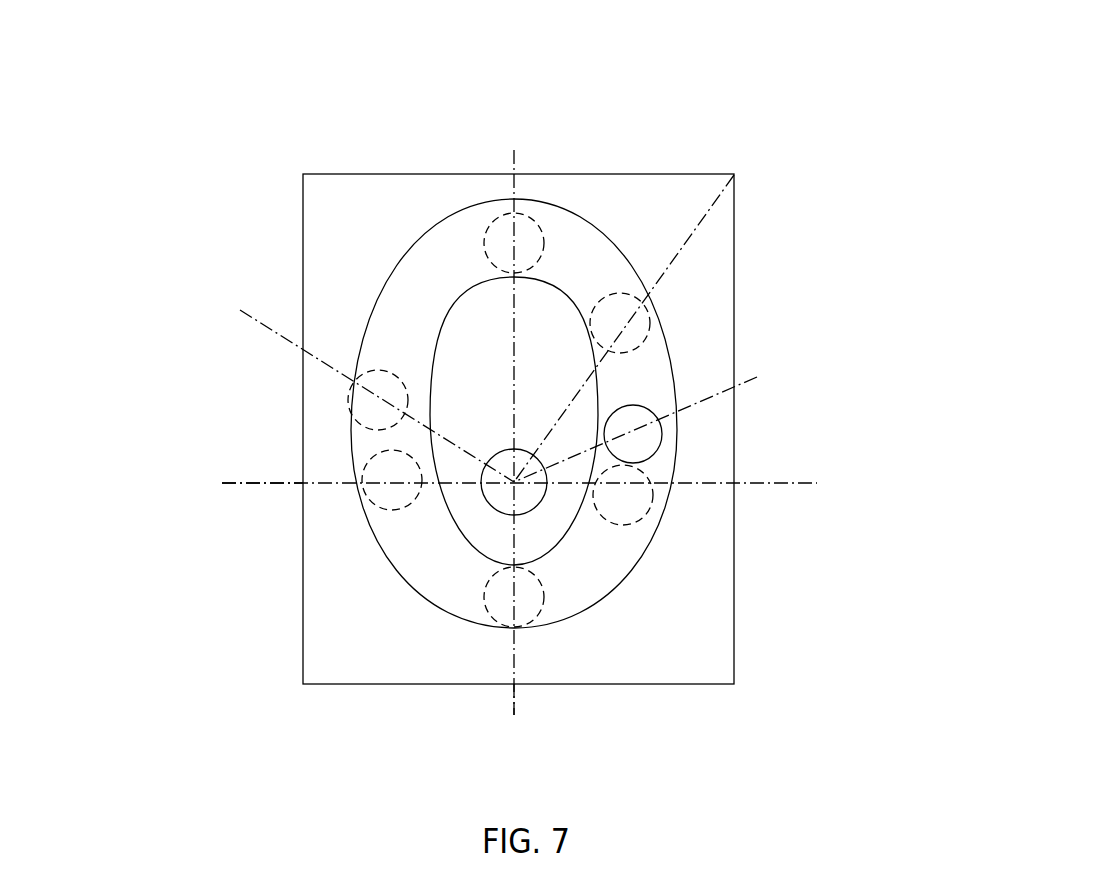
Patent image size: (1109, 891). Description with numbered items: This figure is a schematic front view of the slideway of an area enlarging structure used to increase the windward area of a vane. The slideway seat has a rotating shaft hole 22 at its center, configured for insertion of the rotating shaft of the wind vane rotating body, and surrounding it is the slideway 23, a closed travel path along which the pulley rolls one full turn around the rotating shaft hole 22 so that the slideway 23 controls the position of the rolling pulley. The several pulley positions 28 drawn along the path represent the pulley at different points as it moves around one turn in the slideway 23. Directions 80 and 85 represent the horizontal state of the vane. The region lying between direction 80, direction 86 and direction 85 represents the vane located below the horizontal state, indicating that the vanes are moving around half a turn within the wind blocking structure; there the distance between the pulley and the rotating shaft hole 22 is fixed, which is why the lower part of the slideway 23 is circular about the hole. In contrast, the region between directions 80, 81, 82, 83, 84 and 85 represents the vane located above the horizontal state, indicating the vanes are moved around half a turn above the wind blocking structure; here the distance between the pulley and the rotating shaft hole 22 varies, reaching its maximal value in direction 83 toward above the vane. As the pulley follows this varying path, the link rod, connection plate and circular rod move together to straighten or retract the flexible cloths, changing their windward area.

The rotating shaft hole 22 is at (495, 500).
The slideway 23 is at (403, 257).
The pulley position 28 is at (645, 320).
The direction 80 is at (817, 483).
The direction 81 is at (757, 377).
The direction 82 is at (734, 175).
The direction 83 is at (514, 162).
The direction 84 is at (240, 310).
The direction 85 is at (222, 483).
The direction 86 is at (514, 715).